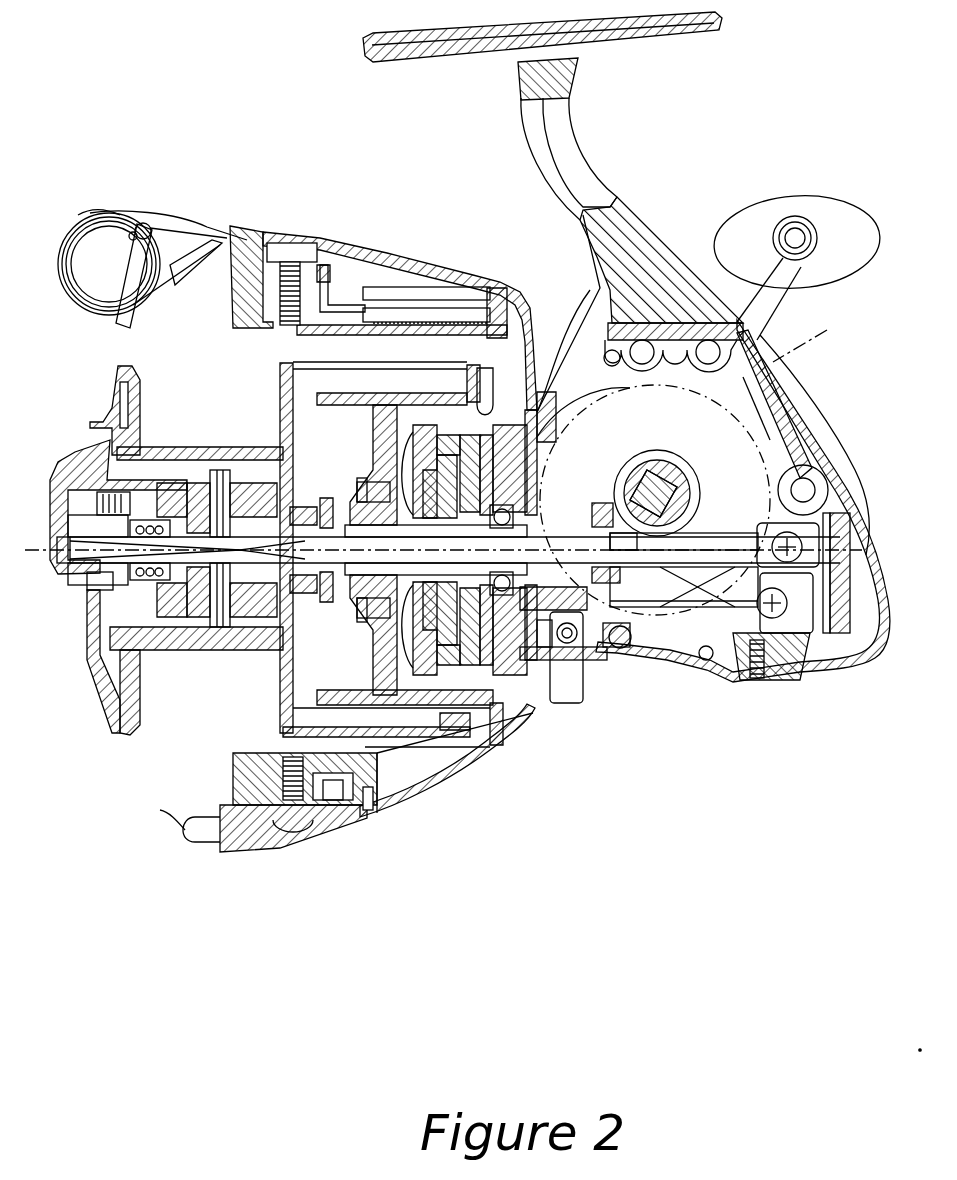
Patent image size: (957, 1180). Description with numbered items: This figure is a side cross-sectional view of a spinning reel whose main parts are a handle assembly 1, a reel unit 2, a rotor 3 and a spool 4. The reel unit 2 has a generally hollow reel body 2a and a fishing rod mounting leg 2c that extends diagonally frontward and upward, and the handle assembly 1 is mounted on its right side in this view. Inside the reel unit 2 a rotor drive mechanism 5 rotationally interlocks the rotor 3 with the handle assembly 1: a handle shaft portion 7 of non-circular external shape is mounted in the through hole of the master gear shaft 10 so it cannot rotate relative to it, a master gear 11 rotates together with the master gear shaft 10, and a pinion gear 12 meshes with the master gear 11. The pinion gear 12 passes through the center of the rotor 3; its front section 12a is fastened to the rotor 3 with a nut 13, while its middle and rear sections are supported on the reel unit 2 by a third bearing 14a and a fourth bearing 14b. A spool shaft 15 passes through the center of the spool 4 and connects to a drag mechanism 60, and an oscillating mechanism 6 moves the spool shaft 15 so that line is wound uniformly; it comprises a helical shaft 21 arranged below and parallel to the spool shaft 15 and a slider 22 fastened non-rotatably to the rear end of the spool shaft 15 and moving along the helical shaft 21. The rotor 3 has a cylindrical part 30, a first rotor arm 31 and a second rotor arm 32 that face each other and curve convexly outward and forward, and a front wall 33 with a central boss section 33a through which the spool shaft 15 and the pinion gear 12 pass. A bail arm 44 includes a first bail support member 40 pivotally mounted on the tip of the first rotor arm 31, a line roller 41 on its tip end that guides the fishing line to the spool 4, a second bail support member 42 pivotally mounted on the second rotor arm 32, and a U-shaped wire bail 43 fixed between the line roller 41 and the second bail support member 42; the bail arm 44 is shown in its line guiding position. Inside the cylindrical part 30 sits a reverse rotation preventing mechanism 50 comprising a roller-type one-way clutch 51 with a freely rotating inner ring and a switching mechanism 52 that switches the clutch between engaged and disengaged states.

The handle assembly 1 is at (802, 188).
The reel unit 2 is at (872, 677).
The reel body 2a is at (823, 493).
The fishing rod mounting leg 2c is at (570, 150).
The rotor 3 is at (370, 843).
The spool 4 is at (217, 428).
The rotor drive mechanism 5 is at (720, 433).
The oscillating mechanism 6 is at (727, 640).
The handle shaft portion 7 is at (795, 520).
The master gear shaft 10 is at (698, 470).
The master gear 11 is at (822, 332).
The pinion gear 12 is at (568, 510).
The front section 12a is at (376, 525).
The nut 13 is at (357, 575).
The third bearing 14a is at (480, 612).
The fourth bearing 14b is at (629, 648).
The spool shaft 15 is at (428, 565).
The helical shaft 21 is at (706, 660).
The slider 22 is at (808, 633).
The cylindrical part 30 is at (397, 706).
The first rotor arm 31 is at (353, 330).
The second rotor arm 32 is at (317, 813).
The front wall 33 is at (387, 445).
The boss section 33a is at (432, 425).
The first bail support member 40 is at (213, 225).
The line roller 41 is at (102, 218).
The second bail support member 42 is at (233, 837).
The bail 43 is at (130, 322).
The bail arm 44 is at (80, 312).
The reverse rotation preventing mechanism 50 is at (468, 425).
The one-way clutch 51 is at (438, 436).
The switching mechanism 52 is at (572, 660).
The drag mechanism 60 is at (181, 600).